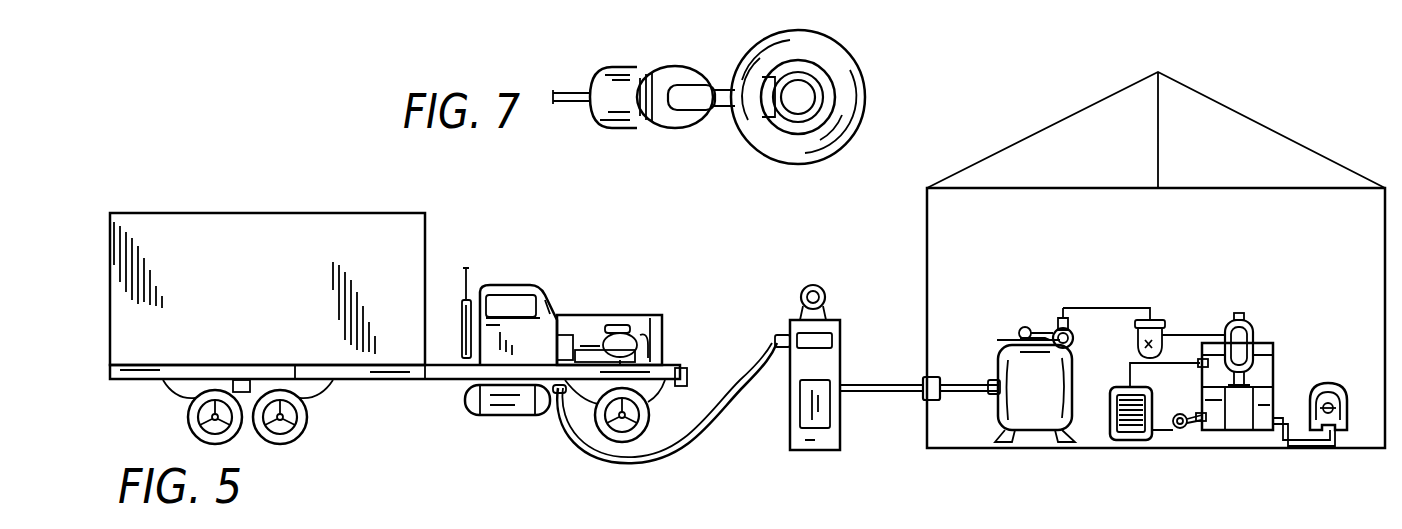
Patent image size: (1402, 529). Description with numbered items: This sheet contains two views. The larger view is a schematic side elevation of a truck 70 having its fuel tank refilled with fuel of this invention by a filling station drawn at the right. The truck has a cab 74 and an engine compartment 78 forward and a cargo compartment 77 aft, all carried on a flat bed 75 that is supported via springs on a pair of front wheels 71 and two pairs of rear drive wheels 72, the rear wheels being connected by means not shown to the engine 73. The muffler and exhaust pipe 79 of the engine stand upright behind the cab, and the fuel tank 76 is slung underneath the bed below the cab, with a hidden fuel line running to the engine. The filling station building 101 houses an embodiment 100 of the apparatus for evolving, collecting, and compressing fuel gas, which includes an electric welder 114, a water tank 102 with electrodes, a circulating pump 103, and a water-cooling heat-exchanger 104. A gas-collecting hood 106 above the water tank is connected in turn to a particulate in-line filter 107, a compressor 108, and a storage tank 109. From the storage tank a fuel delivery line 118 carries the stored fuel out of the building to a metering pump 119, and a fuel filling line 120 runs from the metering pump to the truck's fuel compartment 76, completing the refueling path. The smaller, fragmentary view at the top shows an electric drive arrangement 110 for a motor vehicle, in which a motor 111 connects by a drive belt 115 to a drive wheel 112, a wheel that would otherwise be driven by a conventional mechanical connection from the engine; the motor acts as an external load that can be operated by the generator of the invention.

In FIG. 5, the truck 70 is at (376, 388).
In FIG. 5, the front wheels 71 is at (650, 406).
In FIG. 5, the rear drive wheels 72 is at (222, 437).
In FIG. 5, the engine 73 is at (620, 325).
In FIG. 5, the cab 74 is at (510, 285).
In FIG. 5, the flat bed 75 is at (412, 382).
In FIG. 5, the fuel tank 76 is at (495, 405).
In FIG. 5, the cargo compartment 77 is at (368, 245).
In FIG. 5, the engine compartment 78 is at (578, 315).
In FIG. 5, the muffler and exhaust pipe 79 is at (466, 270).
In FIG. 5, the apparatus embodiment 100 is at (1178, 320).
In FIG. 5, the filling station building 101 is at (940, 230).
In FIG. 5, the water tank 102 is at (1215, 437).
In FIG. 5, the circulating pump 103 is at (1185, 430).
In FIG. 5, the water-cooling heat-exchanger 104 is at (1140, 440).
In FIG. 5, the gas-collecting hood 106 is at (1240, 313).
In FIG. 5, the particulate filter 107 is at (1165, 336).
In FIG. 5, the compressor 108 is at (1060, 316).
In FIG. 5, the storage tank 109 is at (985, 360).
In FIG. 7, the electric drive arrangement 110 is at (721, 118).
In FIG. 7, the motor 111 is at (603, 74).
In FIG. 7, the drive wheel 112 is at (867, 70).
In FIG. 5, the electric welder 114 is at (1318, 385).
In FIG. 7, the drive belt 115 is at (720, 85).
In FIG. 5, the fuel delivery line 118 is at (882, 382).
In FIG. 5, the metering pump 119 is at (805, 438).
In FIG. 5, the fuel filling line 120 is at (690, 450).